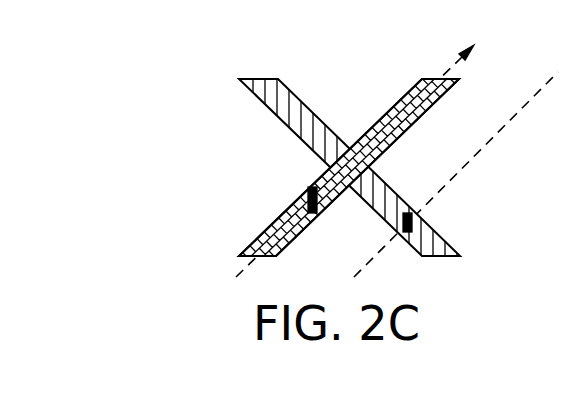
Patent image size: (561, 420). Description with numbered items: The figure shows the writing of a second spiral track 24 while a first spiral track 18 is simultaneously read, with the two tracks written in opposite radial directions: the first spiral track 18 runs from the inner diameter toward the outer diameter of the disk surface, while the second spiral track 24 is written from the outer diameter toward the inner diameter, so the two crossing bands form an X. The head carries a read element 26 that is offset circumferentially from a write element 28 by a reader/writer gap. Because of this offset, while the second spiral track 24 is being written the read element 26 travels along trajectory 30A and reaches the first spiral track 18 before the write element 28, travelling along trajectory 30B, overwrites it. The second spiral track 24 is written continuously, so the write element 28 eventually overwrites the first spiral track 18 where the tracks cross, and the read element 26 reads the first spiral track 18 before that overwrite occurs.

The first spiral track 18 is at (445, 240).
The second spiral track 24 is at (397, 102).
The read element 26 is at (415, 201).
The write element 28 is at (298, 181).
The trajectory 30A is at (559, 71).
The trajectory 30B is at (457, 62).